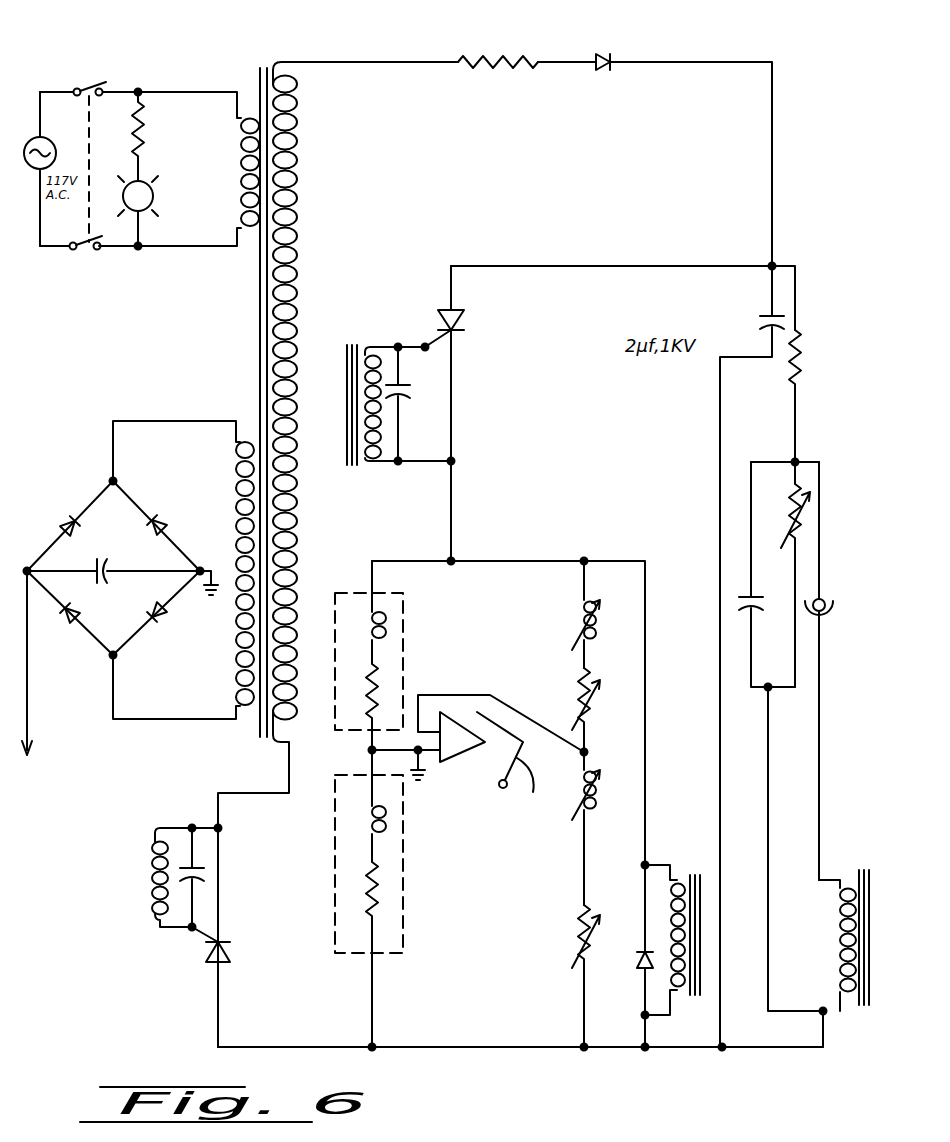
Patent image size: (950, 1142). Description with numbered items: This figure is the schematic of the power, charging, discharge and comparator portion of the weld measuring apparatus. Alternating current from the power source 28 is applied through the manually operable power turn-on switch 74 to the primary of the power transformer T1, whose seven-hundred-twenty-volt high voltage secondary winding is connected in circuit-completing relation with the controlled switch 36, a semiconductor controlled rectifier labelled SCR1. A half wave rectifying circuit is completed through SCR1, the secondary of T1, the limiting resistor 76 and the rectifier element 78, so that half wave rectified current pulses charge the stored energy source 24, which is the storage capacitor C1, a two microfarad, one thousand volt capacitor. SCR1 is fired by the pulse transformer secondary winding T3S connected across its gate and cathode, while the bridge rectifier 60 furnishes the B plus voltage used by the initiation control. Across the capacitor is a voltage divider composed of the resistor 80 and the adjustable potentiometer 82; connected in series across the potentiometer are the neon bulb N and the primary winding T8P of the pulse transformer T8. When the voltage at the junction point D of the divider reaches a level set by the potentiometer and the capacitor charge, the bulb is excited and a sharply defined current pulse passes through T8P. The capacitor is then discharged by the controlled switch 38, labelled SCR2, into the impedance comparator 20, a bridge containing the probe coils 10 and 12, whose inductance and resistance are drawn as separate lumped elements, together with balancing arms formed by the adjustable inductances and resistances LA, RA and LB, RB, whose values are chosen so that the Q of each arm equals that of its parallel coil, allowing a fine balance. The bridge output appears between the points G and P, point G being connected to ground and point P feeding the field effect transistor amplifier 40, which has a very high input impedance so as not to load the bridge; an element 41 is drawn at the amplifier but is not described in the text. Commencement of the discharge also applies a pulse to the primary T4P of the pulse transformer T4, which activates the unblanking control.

The power source 28 is at (44, 137).
The power turn-on switch 74 is at (110, 88).
The power transformer T1 is at (260, 68).
The limiting resistor 76 is at (505, 60).
The rectifier element 78 is at (605, 55).
The stored energy source 24 is at (775, 656).
The storage capacitor C1 is at (784, 322).
The resistor 80 is at (802, 346).
The junction point of the divider network D is at (797, 460).
The adjustable potentiometer 82 is at (812, 499).
The neon bulb N is at (833, 618).
The pulse transformer T8 is at (825, 971).
The primary winding of pulse transformer T8 T8P is at (840, 911).
The semiconductor controlled rectifier SCR2 is at (456, 318).
The controlled switch 38 is at (486, 413).
The impedance comparator 20 is at (508, 581).
The probe coil 12 is at (404, 637).
The probe coil 10 is at (420, 891).
The bridge output terminal point G is at (372, 750).
The amplifier 40 is at (463, 759).
The switch 41 is at (509, 772).
The adjustable inductance LA is at (588, 632).
The adjustable resistance RA is at (591, 704).
The bridge output terminal point P is at (588, 752).
The adjustable inductance LB is at (589, 818).
The adjustable resistance RB is at (583, 921).
The pulse transformer T4 is at (673, 939).
The primary winding of pulse transformer T4 T4P is at (678, 1006).
The bridge rectifier 60 is at (125, 500).
The secondary winding of pulse transformer T3 T3S is at (152, 844).
The controlled switch 36 is at (243, 981).
The semiconductor controlled rectifier SCR1 is at (230, 960).